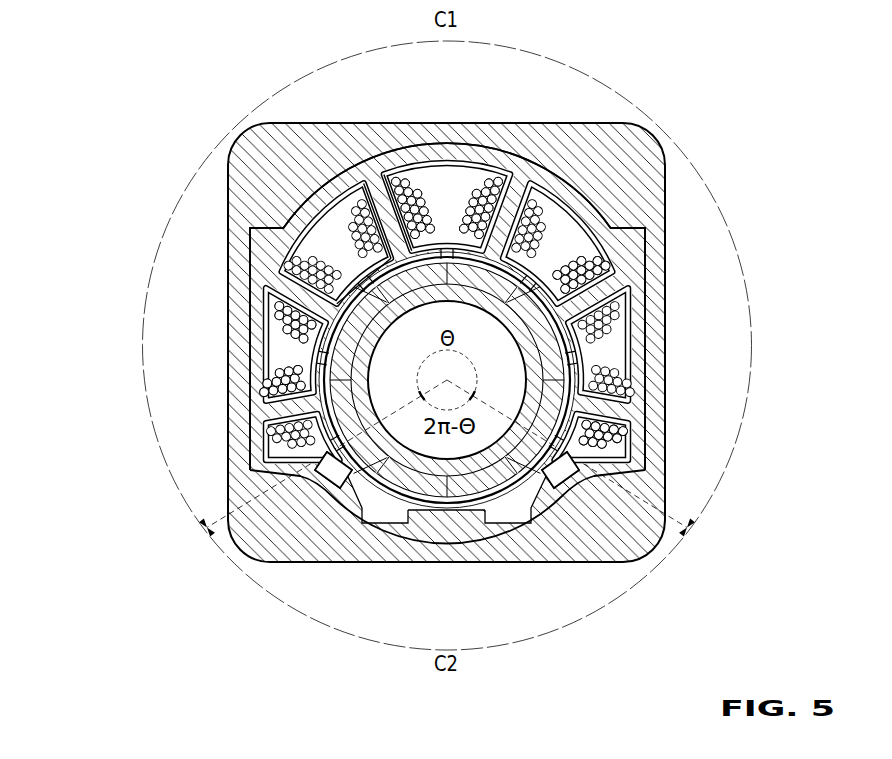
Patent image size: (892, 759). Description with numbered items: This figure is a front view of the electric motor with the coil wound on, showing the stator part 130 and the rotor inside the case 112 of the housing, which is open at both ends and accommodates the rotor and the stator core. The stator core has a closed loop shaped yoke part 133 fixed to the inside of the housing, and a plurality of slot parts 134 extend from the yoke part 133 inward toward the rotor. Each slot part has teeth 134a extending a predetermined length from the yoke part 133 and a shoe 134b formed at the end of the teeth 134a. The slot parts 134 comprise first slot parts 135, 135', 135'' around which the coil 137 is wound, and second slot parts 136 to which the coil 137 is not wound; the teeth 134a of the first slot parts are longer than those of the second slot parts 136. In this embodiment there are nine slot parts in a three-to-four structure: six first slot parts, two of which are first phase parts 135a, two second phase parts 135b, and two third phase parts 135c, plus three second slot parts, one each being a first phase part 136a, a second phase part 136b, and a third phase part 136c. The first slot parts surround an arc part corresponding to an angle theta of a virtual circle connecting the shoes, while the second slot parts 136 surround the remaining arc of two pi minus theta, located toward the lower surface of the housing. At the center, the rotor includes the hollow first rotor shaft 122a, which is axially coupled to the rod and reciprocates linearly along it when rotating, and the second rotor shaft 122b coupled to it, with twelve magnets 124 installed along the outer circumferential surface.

The case 112 is at (668, 327).
The stator part 130 is at (570, 180).
The yoke part 133 is at (648, 299).
The slot parts 134 is at (386, 436).
The teeth 134a is at (384, 203).
The shoe 134b is at (354, 266).
The first slot part 135 is at (447, 207).
The first phase part 135a is at (495, 178).
The second phase part 135b is at (401, 178).
The first slot part 135' is at (440, 291).
The third phase part 135c is at (594, 268).
The first slot part 135'' is at (444, 411).
The second slot parts 136 is at (447, 470).
The first phase part 136a is at (536, 504).
The second phase part 136b is at (468, 528).
The third phase part 136c is at (339, 490).
The coil 137 is at (622, 381).
The first rotor shaft 122a is at (472, 524).
The second rotor shaft 122b is at (368, 512).
The magnets 124 is at (372, 507).